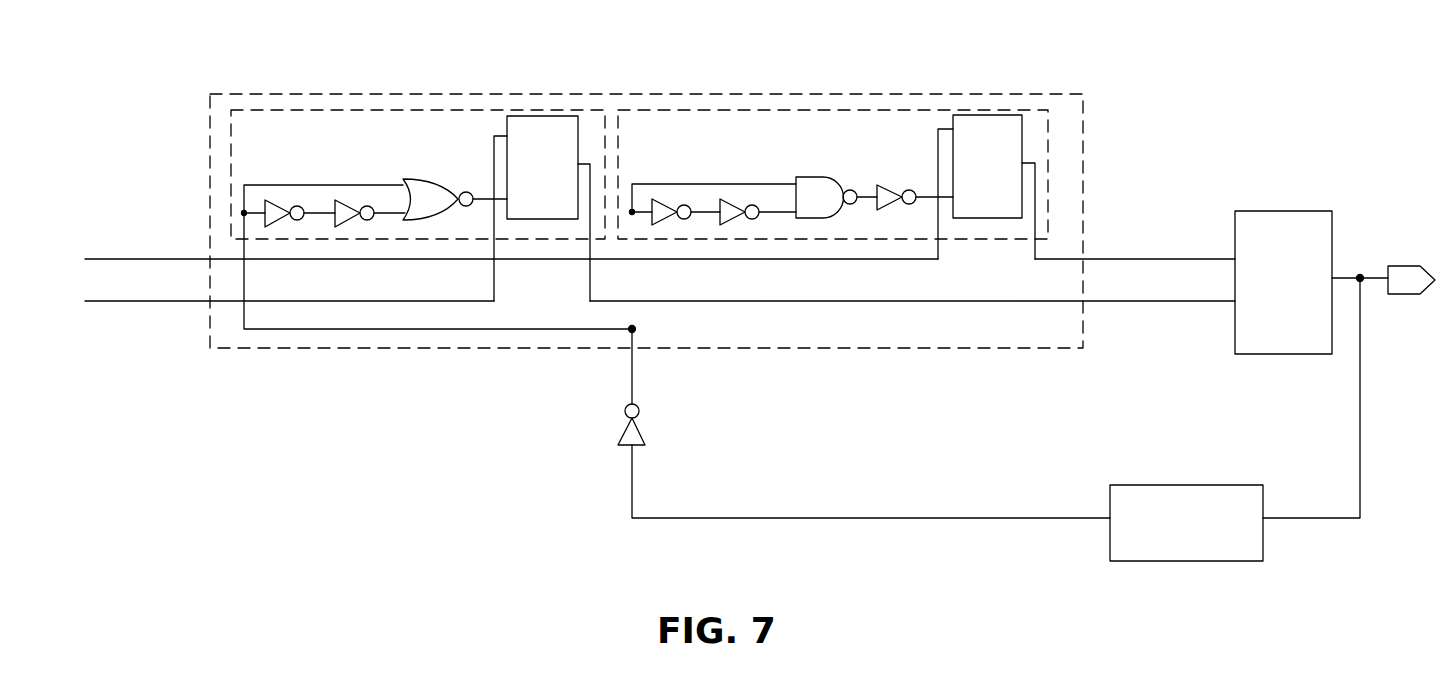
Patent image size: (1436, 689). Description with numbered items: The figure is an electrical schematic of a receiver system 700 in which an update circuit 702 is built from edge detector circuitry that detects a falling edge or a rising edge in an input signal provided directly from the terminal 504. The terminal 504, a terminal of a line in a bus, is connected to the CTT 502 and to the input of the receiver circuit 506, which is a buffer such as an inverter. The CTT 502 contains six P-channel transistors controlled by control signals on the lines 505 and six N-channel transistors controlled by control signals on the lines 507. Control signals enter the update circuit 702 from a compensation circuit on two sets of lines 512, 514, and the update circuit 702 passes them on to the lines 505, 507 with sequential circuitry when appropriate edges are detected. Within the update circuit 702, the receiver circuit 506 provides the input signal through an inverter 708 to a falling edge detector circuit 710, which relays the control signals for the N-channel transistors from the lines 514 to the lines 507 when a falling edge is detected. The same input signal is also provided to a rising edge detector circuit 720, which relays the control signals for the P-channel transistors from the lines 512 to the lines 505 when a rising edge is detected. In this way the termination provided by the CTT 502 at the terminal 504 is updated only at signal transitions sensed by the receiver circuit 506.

The receiver system 700 is at (1213, 87).
The update circuit 702 is at (687, 93).
The falling edge detector circuit 710 is at (292, 145).
The rising edge detector circuit 720 is at (683, 145).
The lines 512 is at (182, 260).
The lines 514 is at (177, 305).
The lines 505 is at (1200, 258).
The lines 507 is at (1200, 302).
The CTT 502 is at (1287, 210).
The terminal 504 is at (1400, 265).
The receiver circuit 506 is at (1193, 484).
The inverter 708 is at (637, 427).